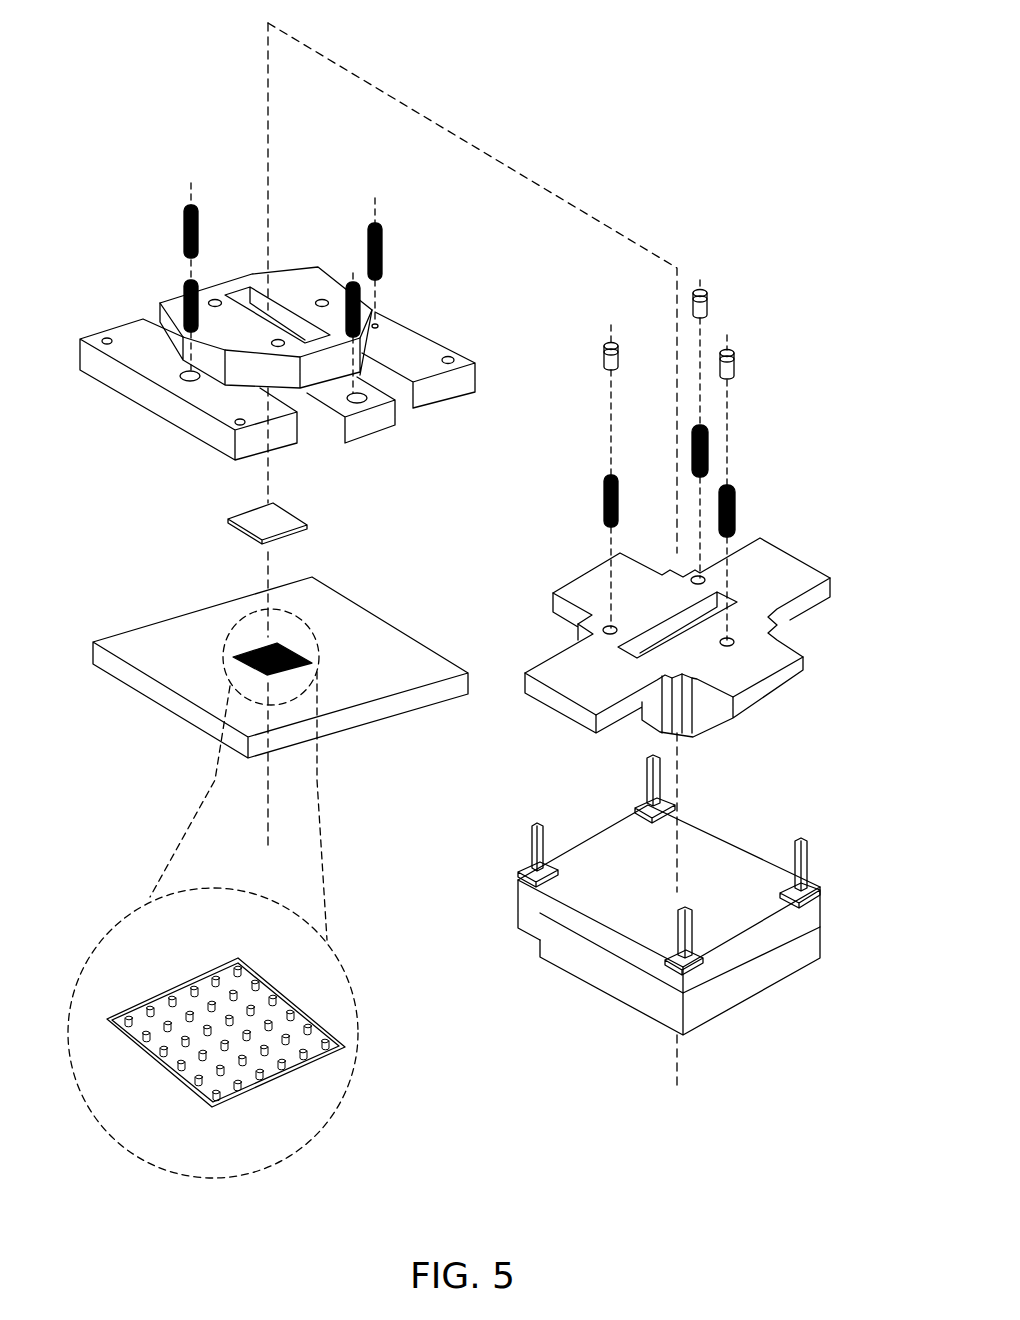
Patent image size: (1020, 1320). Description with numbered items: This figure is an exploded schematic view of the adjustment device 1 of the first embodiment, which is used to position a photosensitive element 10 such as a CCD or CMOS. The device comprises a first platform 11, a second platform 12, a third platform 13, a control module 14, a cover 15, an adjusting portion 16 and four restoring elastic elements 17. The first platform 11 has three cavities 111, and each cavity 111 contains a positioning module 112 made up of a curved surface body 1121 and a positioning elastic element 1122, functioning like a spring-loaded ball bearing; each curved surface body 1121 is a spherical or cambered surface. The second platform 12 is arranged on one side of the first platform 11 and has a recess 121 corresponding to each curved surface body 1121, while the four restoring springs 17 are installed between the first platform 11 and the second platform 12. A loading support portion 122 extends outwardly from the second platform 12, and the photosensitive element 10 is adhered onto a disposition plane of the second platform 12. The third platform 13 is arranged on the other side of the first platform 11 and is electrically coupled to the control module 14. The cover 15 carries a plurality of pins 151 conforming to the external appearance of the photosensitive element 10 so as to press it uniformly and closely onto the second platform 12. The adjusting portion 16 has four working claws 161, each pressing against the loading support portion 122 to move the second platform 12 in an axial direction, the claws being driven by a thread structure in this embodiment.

The adjustment device 1 is at (143, 38).
The photosensitive element 10 is at (258, 520).
The first platform 11 is at (747, 565).
The cavity 111 is at (727, 648).
The positioning module 112 is at (733, 445).
The curved surface body 1121 is at (700, 290).
The positioning elastic element 1122 is at (707, 440).
The second platform 12 is at (282, 283).
The recess 121 is at (220, 297).
The loading support portion 122 is at (143, 352).
The third platform 13 is at (603, 935).
The control module 14 is at (514, 876).
The cover 15 is at (197, 647).
The pin 151 is at (240, 1040).
The adjusting portion 16 is at (698, 1010).
The working claw 161 is at (806, 852).
The restoring elastic element 17 is at (386, 241).